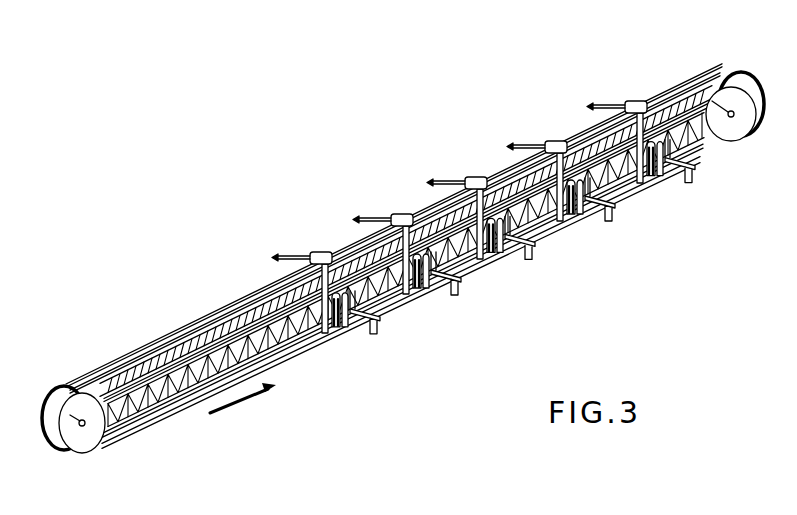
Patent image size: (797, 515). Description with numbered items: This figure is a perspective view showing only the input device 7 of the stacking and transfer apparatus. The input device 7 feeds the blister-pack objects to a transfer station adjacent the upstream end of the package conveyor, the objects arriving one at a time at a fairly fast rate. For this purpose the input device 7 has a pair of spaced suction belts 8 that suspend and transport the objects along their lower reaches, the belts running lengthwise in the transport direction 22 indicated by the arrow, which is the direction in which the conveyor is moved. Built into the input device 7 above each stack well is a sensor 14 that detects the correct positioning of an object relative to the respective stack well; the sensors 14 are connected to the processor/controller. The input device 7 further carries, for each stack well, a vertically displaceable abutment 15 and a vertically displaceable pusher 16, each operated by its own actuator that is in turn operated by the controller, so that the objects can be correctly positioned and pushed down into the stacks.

The input device 7 is at (666, 93).
The suction belts 8 is at (130, 418).
The sensor 14 is at (325, 336).
The abutment 15 is at (523, 245).
The pusher 16 is at (336, 292).
The transport direction 22 is at (241, 409).